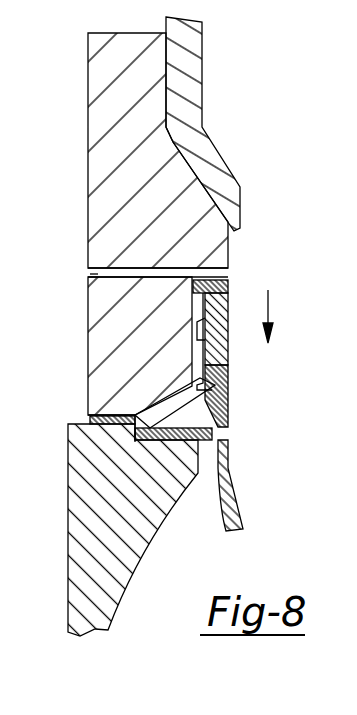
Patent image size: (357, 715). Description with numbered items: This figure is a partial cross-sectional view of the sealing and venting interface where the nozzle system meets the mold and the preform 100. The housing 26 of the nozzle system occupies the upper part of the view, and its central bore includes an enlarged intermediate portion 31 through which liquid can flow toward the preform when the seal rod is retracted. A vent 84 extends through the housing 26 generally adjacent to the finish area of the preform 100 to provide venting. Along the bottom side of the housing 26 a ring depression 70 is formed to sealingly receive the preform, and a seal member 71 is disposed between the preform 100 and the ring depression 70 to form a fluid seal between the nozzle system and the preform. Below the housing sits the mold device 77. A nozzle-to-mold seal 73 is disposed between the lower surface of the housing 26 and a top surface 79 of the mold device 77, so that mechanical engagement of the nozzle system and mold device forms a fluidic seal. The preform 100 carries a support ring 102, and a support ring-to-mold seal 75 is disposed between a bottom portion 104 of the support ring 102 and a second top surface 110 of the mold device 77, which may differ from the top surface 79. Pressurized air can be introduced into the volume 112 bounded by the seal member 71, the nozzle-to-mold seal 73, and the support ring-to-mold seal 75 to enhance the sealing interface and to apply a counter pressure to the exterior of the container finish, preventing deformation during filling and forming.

The housing 26 is at (88, 100).
The enlarged intermediate portion 31 is at (202, 100).
The vent 84 is at (88, 273).
The seal member 71 is at (232, 287).
The ring depression 70 is at (200, 363).
The volume 112 is at (205, 390).
The support ring 102 is at (160, 415).
The top surface 79 is at (70, 422).
The nozzle-to-mold seal 73 is at (88, 416).
The bottom portion 104 is at (222, 433).
The support ring-to-mold seal 75 is at (228, 452).
The preform 100 is at (238, 500).
The mold device 77 is at (68, 497).
The top surface 110 is at (150, 445).